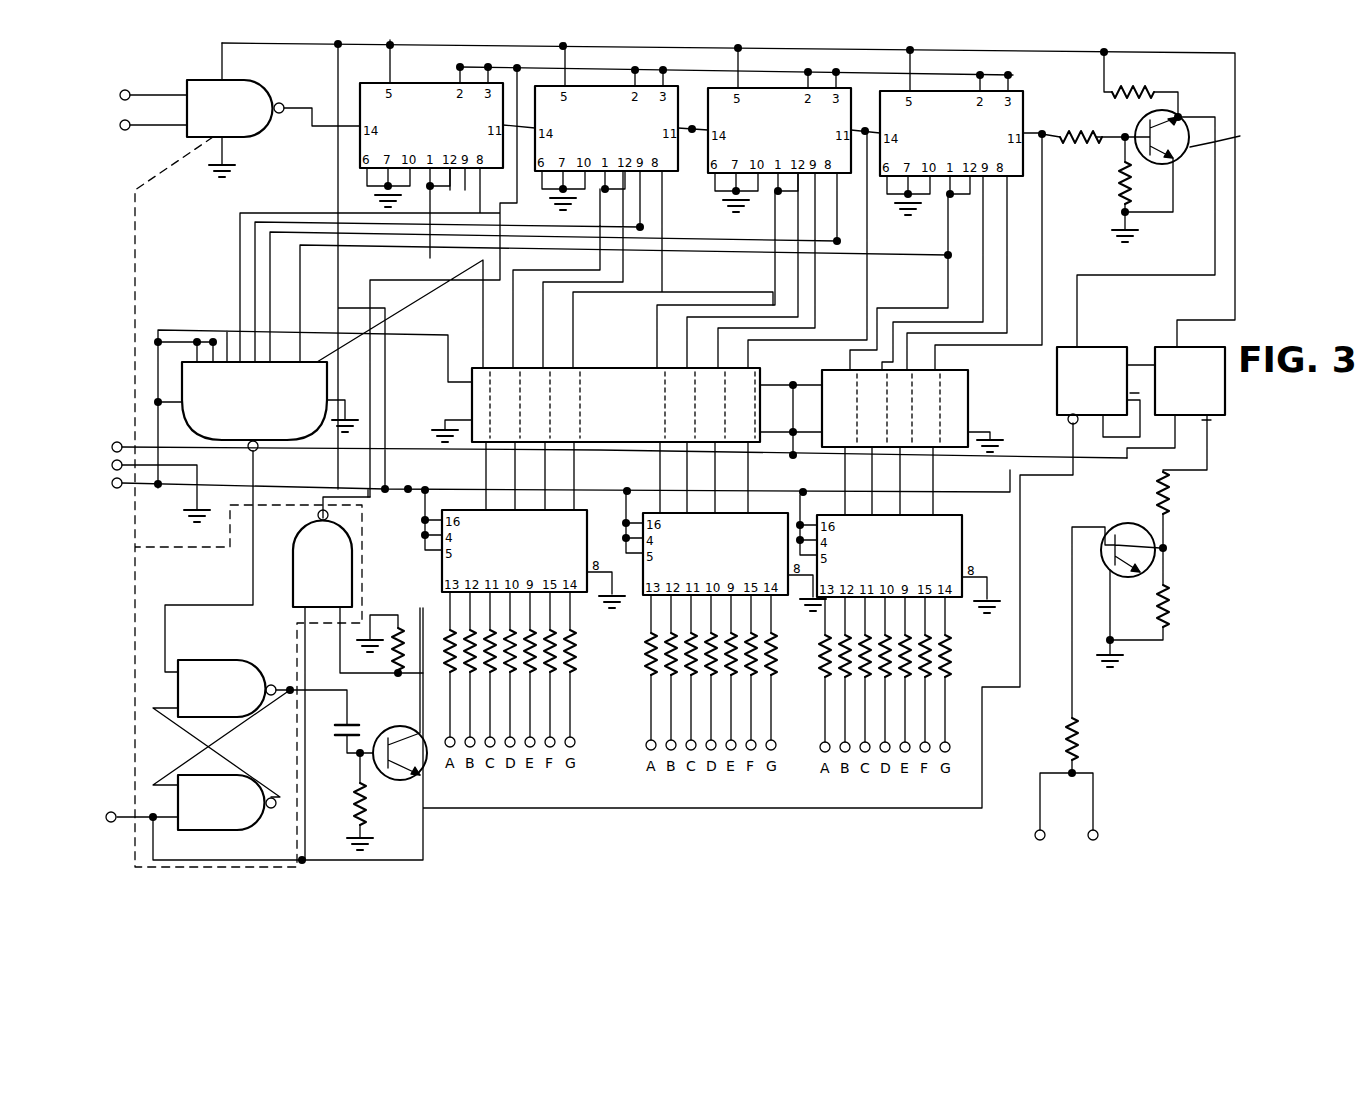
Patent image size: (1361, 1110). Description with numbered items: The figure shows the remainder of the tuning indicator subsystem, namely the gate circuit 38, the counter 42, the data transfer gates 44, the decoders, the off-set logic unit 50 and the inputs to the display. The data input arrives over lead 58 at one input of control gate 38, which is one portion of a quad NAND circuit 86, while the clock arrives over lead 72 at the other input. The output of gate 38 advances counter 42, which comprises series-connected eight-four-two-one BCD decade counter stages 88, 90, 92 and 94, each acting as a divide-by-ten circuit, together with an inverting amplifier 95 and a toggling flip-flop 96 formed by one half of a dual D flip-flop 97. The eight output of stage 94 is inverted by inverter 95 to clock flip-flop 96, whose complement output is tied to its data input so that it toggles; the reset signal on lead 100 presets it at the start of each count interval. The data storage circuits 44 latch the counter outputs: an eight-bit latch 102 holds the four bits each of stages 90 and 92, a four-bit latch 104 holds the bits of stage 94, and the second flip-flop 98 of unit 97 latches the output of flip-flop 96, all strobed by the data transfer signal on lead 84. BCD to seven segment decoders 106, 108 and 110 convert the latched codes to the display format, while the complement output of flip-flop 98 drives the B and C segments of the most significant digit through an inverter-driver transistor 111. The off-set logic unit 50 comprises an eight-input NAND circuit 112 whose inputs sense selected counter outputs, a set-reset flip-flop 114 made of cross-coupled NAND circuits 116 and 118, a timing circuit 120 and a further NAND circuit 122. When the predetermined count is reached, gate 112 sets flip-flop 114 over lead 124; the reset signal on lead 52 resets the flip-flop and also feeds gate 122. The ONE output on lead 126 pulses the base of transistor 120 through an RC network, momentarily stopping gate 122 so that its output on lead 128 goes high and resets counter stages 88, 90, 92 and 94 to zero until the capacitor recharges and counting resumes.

The counter 42 is at (660, 40).
The gate circuit 38 is at (258, 80).
The lead 58 is at (150, 87).
The lead 72 is at (150, 133).
The quad NAND circuit 86 is at (258, 142).
The decade counter stage 88 is at (436, 90).
The decade counter stage 90 is at (610, 80).
The decade counter stage 92 is at (780, 80).
The decade counter stage 94 is at (952, 80).
The inverting amplifier 95 is at (1212, 100).
The toggling flip-flop 96 is at (1085, 346).
The dual D flip-flop 97 is at (1145, 335).
The second D type flip-flop 98 is at (1225, 410).
The lead 128 is at (414, 290).
The data transfer gates 44 is at (624, 329).
The eight-bit latch 102 is at (634, 364).
The four-bit latch circuit 104 is at (968, 375).
The eight-input NAND circuit 112 is at (327, 372).
The lead 84 is at (218, 462).
The BCD to seven segment decoder 106 is at (458, 505).
The BCD to seven segment decoder 108 is at (768, 508).
The BCD to seven segment decoder 110 is at (968, 555).
The lead 100 is at (1020, 648).
The transistor 111 is at (1100, 556).
The NAND circuit 122 is at (296, 570).
The lead 124 is at (176, 602).
The set-reset flip-flop 114 is at (205, 670).
The NAND circuit 116 is at (250, 722).
The NAND circuit 118 is at (250, 820).
The lead 126 is at (322, 706).
The timing circuit 120 is at (397, 715).
The off-set logic unit 50 is at (336, 782).
The lead 52 is at (118, 810).